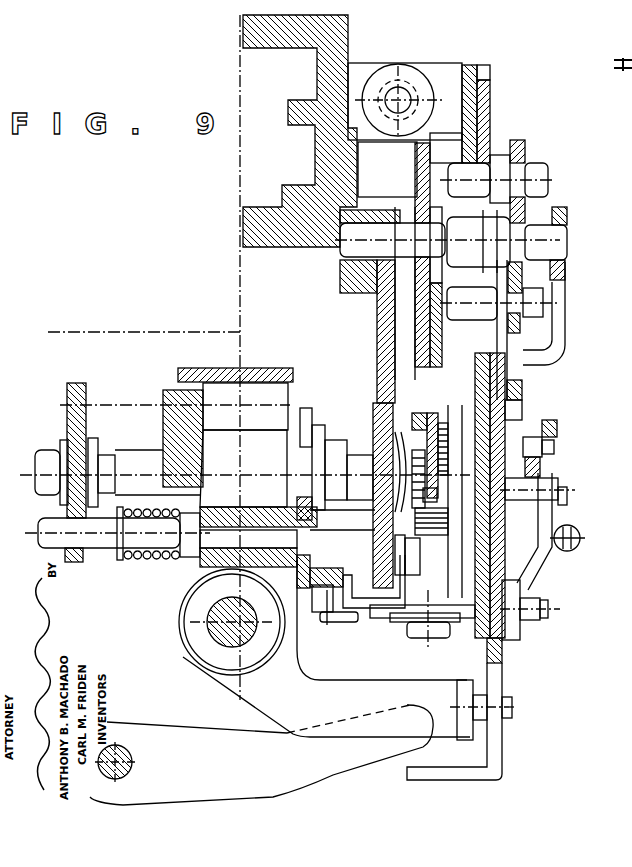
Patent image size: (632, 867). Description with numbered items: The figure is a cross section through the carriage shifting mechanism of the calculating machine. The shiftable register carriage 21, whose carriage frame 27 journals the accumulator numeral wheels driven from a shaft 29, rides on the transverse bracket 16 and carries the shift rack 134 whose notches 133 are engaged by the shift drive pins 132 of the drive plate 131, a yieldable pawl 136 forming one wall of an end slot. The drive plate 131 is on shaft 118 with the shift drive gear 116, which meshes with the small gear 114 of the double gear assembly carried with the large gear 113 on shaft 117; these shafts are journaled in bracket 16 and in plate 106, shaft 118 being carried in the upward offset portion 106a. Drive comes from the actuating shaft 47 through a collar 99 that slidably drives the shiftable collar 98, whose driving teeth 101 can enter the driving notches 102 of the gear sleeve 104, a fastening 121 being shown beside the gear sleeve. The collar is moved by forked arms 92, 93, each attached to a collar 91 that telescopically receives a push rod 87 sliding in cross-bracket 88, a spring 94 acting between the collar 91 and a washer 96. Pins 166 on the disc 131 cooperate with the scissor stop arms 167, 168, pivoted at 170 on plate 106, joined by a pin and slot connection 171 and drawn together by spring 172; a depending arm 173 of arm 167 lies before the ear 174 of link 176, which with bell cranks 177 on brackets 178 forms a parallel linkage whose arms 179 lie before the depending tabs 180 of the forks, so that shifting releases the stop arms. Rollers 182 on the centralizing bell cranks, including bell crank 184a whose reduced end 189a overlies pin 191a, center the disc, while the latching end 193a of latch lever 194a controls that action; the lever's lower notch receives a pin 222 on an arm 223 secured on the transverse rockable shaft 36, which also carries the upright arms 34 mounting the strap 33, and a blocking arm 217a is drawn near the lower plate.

The shiftable register carriage 21 is at (356, 40).
The carriage frame 27 is at (237, 236).
The shaft 29 is at (146, 332).
The notches 133 is at (462, 147).
The shift rack 134 is at (468, 65).
The yieldable pawl 136 is at (487, 75).
The shift drive gear 116 is at (417, 176).
The shaft 118 is at (345, 263).
The transverse bracket 16 is at (377, 305).
The large gear 113 is at (377, 327).
The small gear 114 is at (377, 347).
The shaft 117 is at (378, 383).
The shift drive pins 132 is at (490, 160).
The drive plate 131 is at (514, 140).
The pins 166 is at (536, 167).
The rollers 182 is at (527, 223).
The upward offset portion 106a is at (565, 268).
The centralizing bell crank 184a is at (530, 340).
The scissor lever 168 is at (535, 370).
The reduced end 189a is at (522, 388).
The pin 191a is at (515, 415).
The scissor lever 167 is at (553, 425).
The pin and slot connection 171 is at (552, 445).
The latching end 193a is at (555, 468).
The plate 106 is at (560, 490).
The pivot 170 is at (568, 507).
The spring 172 is at (577, 547).
The depending arm 173 is at (548, 572).
The ear 174 is at (520, 630).
The latching lever 194a is at (495, 677).
The pin 222 is at (510, 718).
The gear sleeve 104 is at (455, 508).
The screw 121 is at (432, 535).
The strap 33 is at (200, 360).
The upright arms 34 is at (253, 383).
The collar 99 is at (262, 436).
The collar 91 is at (228, 508).
The forked arm 92 is at (300, 505).
The forked arm 93 is at (309, 405).
The shiftable drive-establishing collar 98 is at (320, 425).
The driving notches 102 is at (362, 455).
The driving teeth 101 is at (335, 515).
The actuating shaft 47 is at (48, 452).
The cross-bracket 88 is at (80, 383).
The push rod 87 is at (45, 518).
The washer 96 is at (118, 560).
The spring 94 is at (157, 562).
The transverse rockable shaft 36 is at (215, 617).
The depending tab 180 is at (302, 595).
The bracket 178 is at (357, 592).
The arm 179 is at (327, 620).
The bell crank 177 is at (375, 607).
The link 176 is at (413, 624).
The arm 223 is at (247, 693).
The cam plate 217a is at (333, 775).